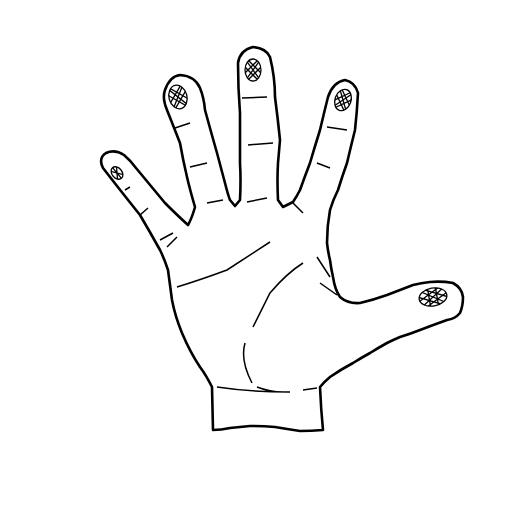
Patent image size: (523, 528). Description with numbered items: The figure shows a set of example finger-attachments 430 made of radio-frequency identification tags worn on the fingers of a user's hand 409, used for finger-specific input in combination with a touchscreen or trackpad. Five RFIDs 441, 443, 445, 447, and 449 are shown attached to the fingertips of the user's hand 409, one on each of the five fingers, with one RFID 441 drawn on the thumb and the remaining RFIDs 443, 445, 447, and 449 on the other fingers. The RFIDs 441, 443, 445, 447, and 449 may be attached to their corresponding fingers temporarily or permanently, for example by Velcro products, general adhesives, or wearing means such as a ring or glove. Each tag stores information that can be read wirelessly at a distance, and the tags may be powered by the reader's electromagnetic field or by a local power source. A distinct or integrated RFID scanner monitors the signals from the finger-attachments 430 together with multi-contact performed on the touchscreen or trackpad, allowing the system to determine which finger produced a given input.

The finger-attachments 430 is at (128, 82).
The user's hand 409 is at (178, 328).
The RFID 441 is at (433, 285).
The RFID 443 is at (354, 101).
The RFID 445 is at (263, 69).
The RFID 447 is at (168, 100).
The RFID 449 is at (108, 173).